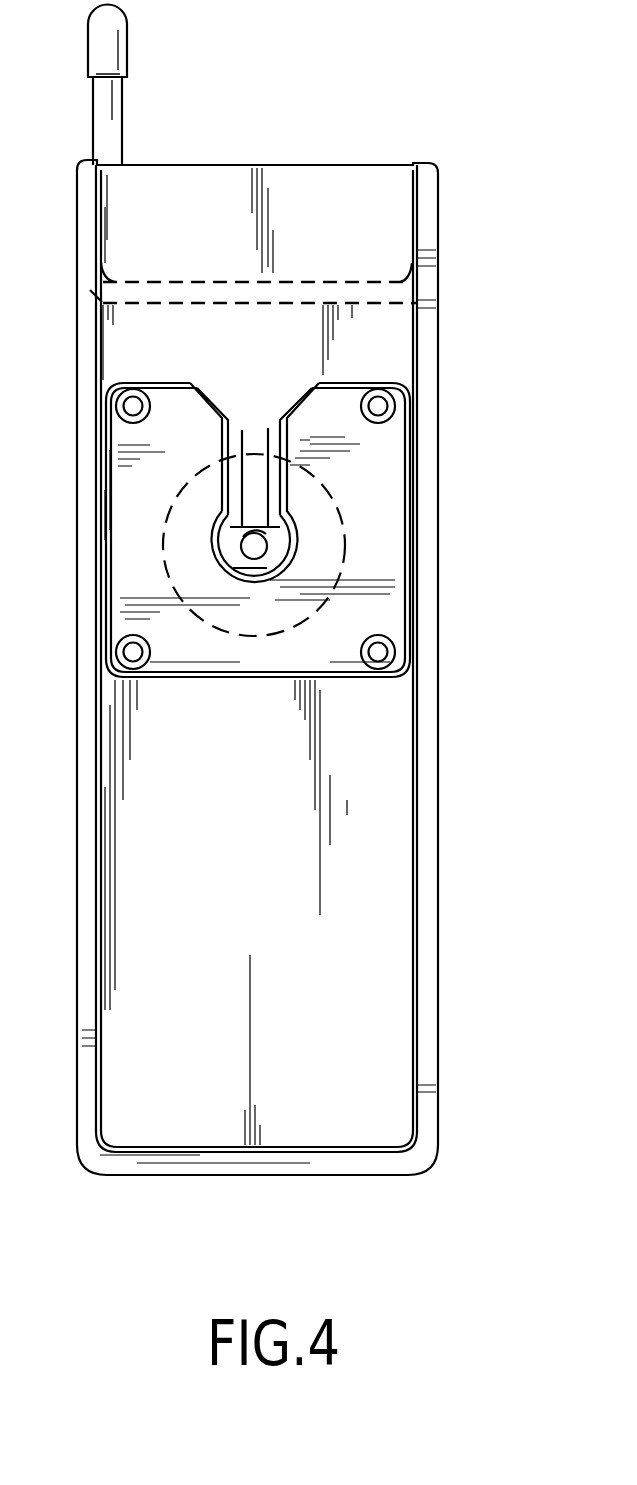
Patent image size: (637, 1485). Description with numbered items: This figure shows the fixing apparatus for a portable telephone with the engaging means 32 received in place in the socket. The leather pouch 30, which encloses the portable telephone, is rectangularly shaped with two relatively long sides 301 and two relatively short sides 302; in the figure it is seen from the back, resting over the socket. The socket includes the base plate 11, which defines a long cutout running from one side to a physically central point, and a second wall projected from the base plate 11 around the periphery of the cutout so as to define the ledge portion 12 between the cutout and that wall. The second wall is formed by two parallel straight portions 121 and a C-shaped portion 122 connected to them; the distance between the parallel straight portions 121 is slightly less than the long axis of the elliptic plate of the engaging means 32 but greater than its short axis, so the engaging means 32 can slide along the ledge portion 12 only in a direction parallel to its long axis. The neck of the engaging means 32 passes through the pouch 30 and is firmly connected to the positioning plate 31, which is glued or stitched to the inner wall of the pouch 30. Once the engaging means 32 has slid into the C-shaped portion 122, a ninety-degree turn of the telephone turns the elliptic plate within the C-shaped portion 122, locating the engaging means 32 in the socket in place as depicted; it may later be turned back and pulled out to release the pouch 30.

The leather pouch 30 is at (400, 767).
The relatively long sides 301 is at (437, 869).
The relatively short sides 302 is at (313, 1177).
The base plate 11 is at (382, 481).
The ledge portion 12 is at (245, 437).
The parallel straight portions 121 is at (287, 489).
The C-shaped portion 122 is at (240, 570).
The positioning plate 31 is at (395, 627).
The engaging means 32 is at (263, 560).